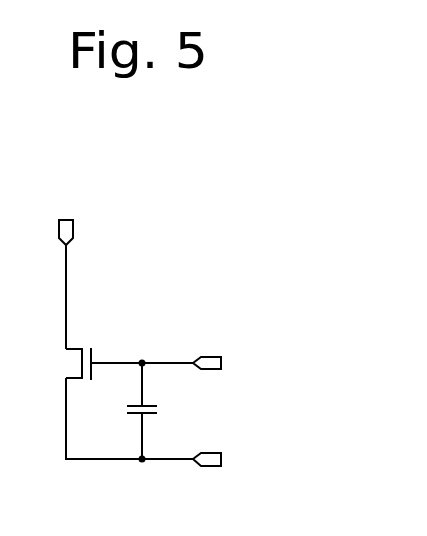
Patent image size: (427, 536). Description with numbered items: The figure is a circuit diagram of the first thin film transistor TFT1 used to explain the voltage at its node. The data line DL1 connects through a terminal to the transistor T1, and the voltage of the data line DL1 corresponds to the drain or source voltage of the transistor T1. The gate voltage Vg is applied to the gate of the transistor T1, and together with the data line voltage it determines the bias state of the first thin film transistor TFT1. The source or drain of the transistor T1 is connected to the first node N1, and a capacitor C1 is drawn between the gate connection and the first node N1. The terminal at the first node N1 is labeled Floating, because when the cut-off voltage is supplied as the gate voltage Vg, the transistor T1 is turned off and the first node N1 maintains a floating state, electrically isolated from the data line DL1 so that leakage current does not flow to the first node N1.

The first thin film transistor TFT1 is at (305, 189).
The data line DL1 is at (64, 269).
The transistor T1 is at (90, 364).
The capacitor C1 is at (128, 411).
The first node N1 is at (129, 435).
The gate voltage Vg is at (198, 364).
The floating state Floating is at (262, 460).